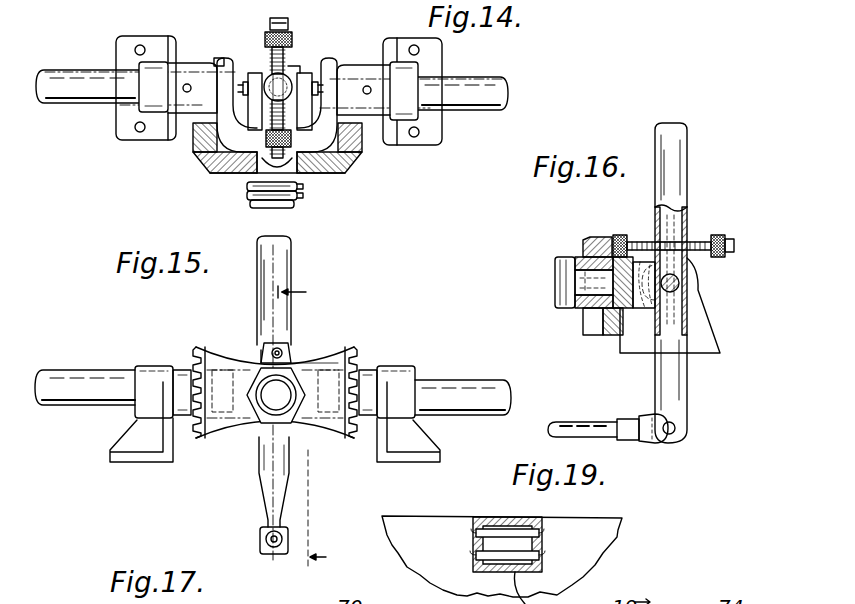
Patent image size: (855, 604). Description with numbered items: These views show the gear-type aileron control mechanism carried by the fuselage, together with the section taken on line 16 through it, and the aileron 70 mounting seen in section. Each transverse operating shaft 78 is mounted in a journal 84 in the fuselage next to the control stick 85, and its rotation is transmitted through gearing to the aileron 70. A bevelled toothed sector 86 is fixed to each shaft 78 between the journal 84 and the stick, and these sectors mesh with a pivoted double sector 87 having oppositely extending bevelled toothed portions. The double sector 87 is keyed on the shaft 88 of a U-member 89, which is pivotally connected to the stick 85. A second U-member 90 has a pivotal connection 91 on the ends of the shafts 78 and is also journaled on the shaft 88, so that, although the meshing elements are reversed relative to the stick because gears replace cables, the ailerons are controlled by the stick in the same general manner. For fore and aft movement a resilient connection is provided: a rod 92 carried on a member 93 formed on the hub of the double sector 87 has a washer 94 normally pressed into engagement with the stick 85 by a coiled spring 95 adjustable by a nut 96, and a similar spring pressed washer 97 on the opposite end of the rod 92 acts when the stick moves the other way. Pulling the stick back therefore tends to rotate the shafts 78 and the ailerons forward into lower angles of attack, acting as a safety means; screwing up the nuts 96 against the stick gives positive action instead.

In FIG. 15, the section line 16 is at (315, 423).
In FIG. 19, the aileron 70 is at (583, 521).
In FIG. 14, the transverse operating shaft 78 is at (87, 70).
In FIG. 15, the transverse operating shaft 78 is at (103, 375).
In FIG. 14, the journal 84 is at (152, 66).
In FIG. 15, the journal 84 is at (148, 366).
In FIG. 16, the journal 84 is at (694, 282).
In FIG. 14, the control stick 85 is at (293, 70).
In FIG. 15, the control stick 85 is at (293, 273).
In FIG. 16, the control stick 85 is at (683, 182).
In FIG. 14, the bevelled toothed sector 86 is at (193, 137).
In FIG. 15, the bevelled toothed sector 86 is at (195, 350).
In FIG. 16, the bevelled toothed sector 86 is at (620, 328).
In FIG. 14, the double sector 87 is at (332, 175).
In FIG. 15, the double sector 87 is at (330, 362).
In FIG. 16, the double sector 87 is at (590, 322).
In FIG. 14, the shaft 88 is at (278, 172).
In FIG. 15, the shaft 88 is at (270, 400).
In FIG. 16, the shaft 88 is at (580, 256).
In FIG. 14, the U-member 89 is at (310, 90).
In FIG. 16, the U-member 89 is at (645, 318).
In FIG. 14, the U-member 90 is at (222, 133).
In FIG. 15, the U-member 90 is at (250, 362).
In FIG. 14, the pivotal connection 91 is at (215, 62).
In FIG. 14, the rod 92 is at (267, 77).
In FIG. 15, the rod 92 is at (266, 355).
In FIG. 16, the rod 92 is at (688, 240).
In FIG. 14, the member 93 is at (264, 188).
In FIG. 15, the member 93 is at (290, 352).
In FIG. 16, the member 93 is at (594, 236).
In FIG. 14, the washer 94 is at (220, 58).
In FIG. 14, the coiled spring 95 is at (280, 104).
In FIG. 16, the coiled spring 95 is at (649, 240).
In FIG. 14, the nut 96 is at (250, 172).
In FIG. 16, the nut 96 is at (620, 234).
In FIG. 14, the spring pressed washer 97 is at (268, 82).